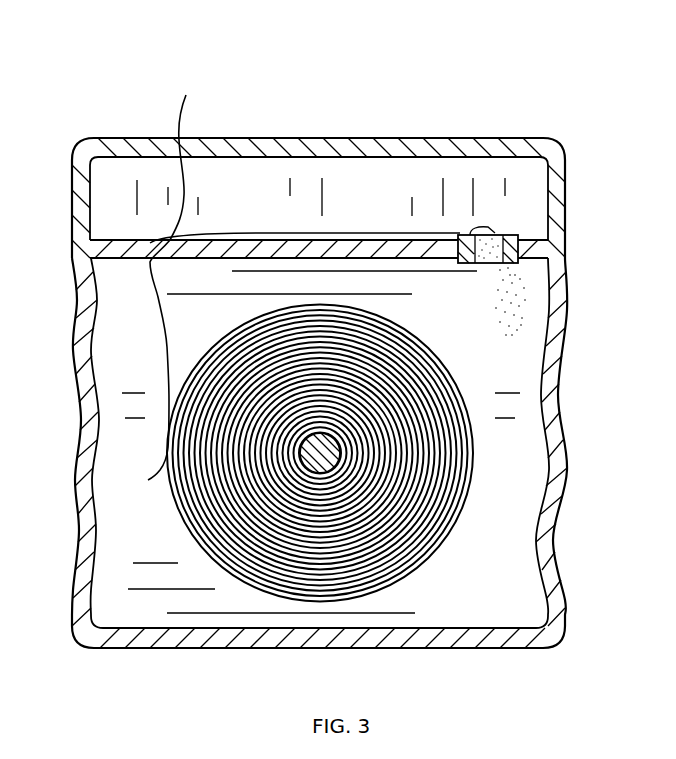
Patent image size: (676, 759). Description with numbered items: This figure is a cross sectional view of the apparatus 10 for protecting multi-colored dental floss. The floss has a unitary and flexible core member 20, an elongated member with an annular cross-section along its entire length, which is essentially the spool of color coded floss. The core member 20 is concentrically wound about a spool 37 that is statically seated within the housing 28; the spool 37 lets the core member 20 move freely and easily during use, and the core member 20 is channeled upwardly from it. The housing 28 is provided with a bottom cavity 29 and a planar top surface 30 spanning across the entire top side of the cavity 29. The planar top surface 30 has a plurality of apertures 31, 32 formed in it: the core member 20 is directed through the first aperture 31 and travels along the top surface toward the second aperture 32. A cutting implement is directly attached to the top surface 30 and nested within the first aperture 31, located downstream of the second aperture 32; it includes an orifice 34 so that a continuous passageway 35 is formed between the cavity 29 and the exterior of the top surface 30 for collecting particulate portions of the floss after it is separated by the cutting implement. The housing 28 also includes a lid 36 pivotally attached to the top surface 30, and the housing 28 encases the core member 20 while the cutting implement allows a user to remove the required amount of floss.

The apparatus 10 is at (109, 88).
The core member 20 is at (474, 410).
The housing 28 is at (336, 133).
The bottom cavity 29 is at (487, 555).
The planar top surface 30 is at (540, 254).
The first aperture 31 is at (304, 275).
The second aperture 32 is at (524, 241).
The orifice 34 is at (518, 237).
The continuous passageway 35 is at (514, 310).
The lid 36 is at (480, 152).
The spool 37 is at (320, 453).